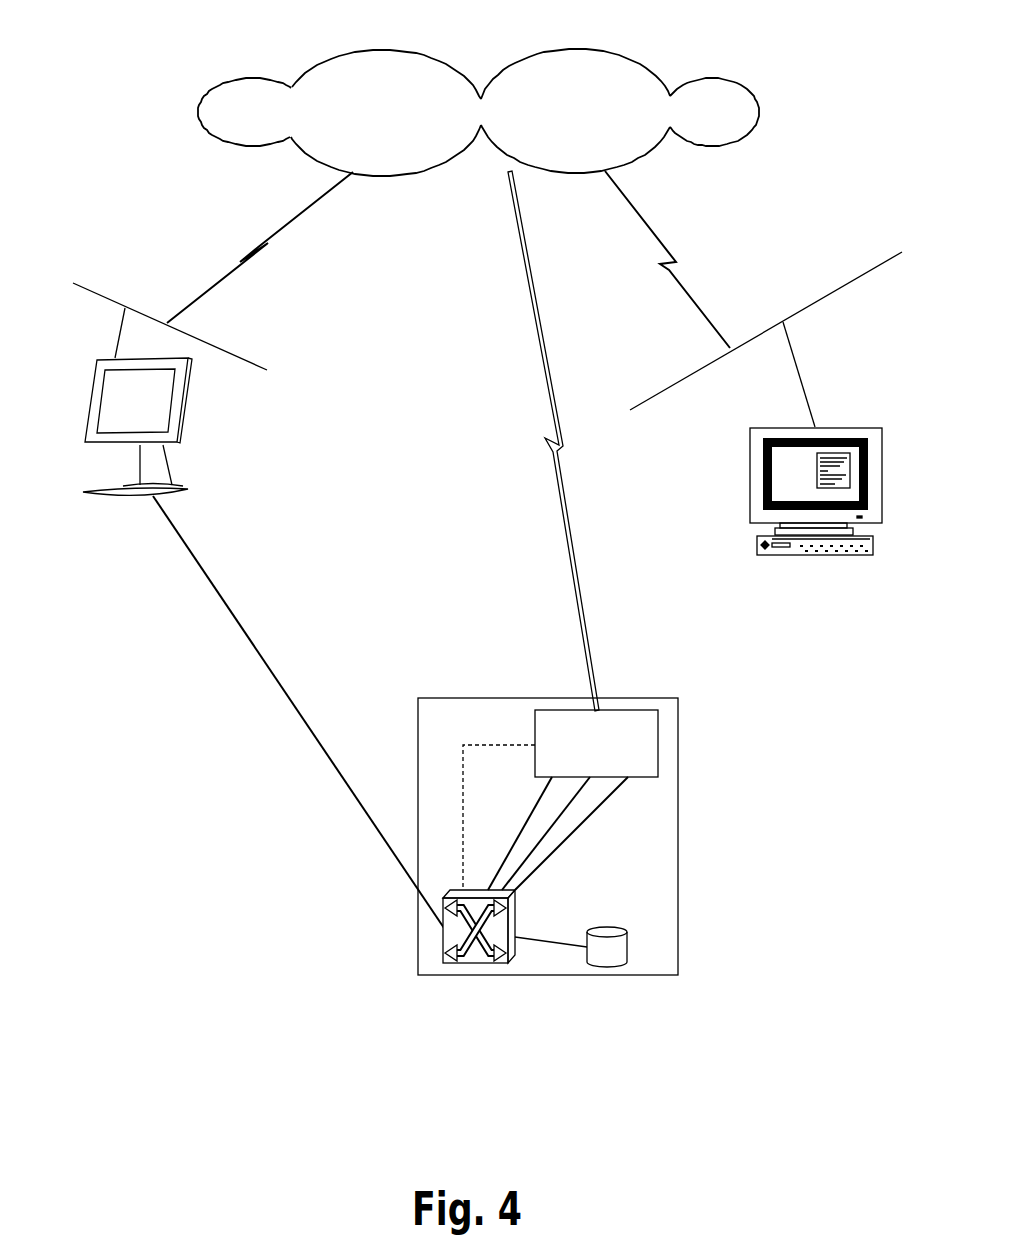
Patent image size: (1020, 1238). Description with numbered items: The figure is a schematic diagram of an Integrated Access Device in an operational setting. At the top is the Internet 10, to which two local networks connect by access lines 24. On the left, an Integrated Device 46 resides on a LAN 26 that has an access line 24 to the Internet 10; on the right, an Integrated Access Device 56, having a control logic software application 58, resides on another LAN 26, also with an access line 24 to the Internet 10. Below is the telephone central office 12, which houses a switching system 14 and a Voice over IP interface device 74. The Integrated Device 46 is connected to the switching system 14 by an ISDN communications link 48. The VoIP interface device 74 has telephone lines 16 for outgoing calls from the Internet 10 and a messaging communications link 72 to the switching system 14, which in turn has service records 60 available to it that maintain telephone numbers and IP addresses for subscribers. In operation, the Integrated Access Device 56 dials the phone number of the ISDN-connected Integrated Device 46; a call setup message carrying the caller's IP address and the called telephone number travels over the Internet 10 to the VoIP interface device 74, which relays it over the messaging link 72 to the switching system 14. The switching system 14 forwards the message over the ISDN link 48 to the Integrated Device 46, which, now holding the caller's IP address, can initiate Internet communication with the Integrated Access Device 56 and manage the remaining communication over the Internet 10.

The Internet 10 is at (347, 43).
The access line 24 is at (302, 240).
The LAN 26 is at (145, 305).
The Integrated Device 46 is at (82, 377).
The ISDN communications link 48 is at (211, 605).
The Integrated Access Device 56 is at (742, 483).
The control logic software application 58 is at (835, 450).
The central office 12 is at (692, 887).
The Voice over IP interface device 74 is at (670, 717).
The messaging communications link 72 is at (472, 738).
The telephone lines 16 is at (600, 815).
The switching system 14 is at (427, 952).
The service records 60 is at (605, 968).